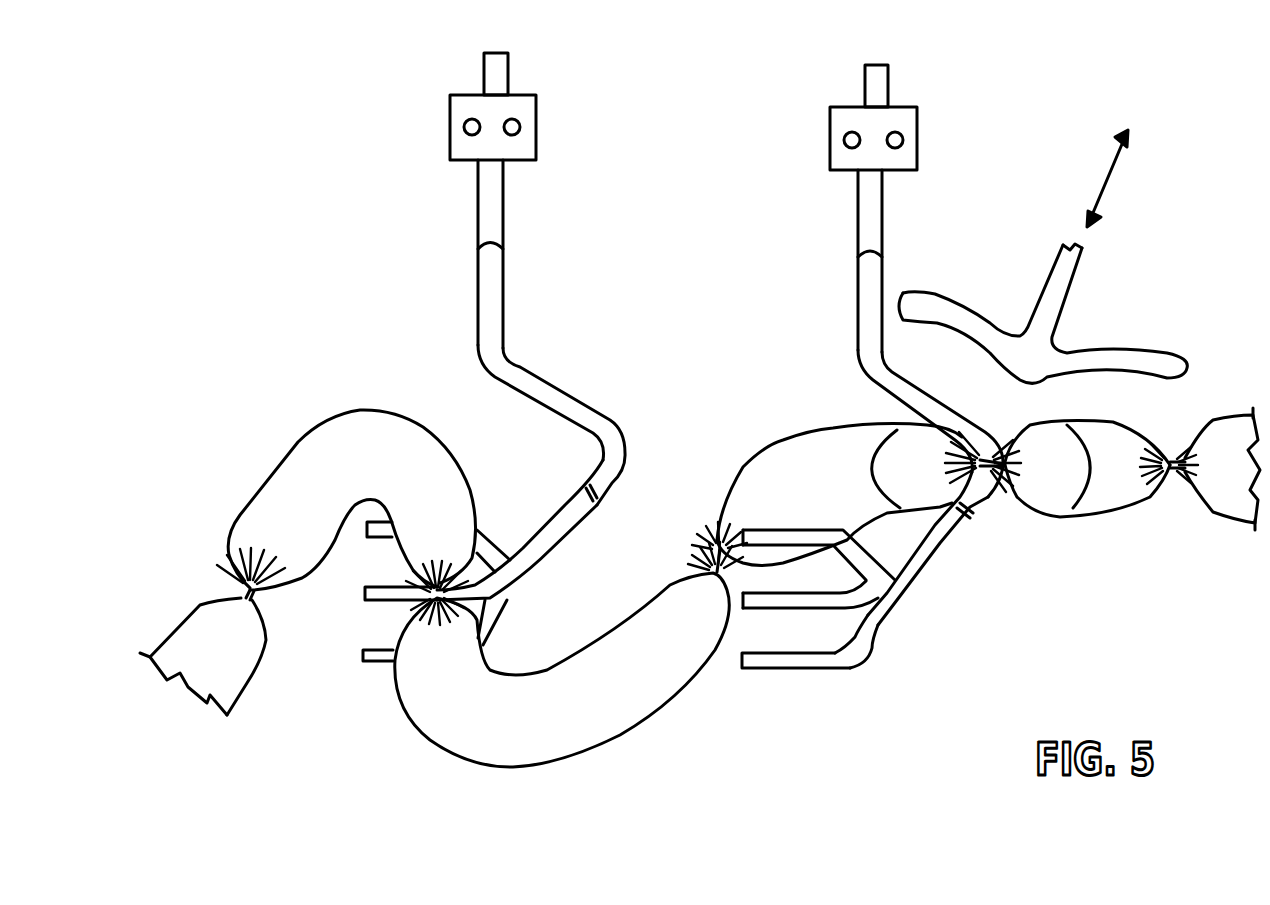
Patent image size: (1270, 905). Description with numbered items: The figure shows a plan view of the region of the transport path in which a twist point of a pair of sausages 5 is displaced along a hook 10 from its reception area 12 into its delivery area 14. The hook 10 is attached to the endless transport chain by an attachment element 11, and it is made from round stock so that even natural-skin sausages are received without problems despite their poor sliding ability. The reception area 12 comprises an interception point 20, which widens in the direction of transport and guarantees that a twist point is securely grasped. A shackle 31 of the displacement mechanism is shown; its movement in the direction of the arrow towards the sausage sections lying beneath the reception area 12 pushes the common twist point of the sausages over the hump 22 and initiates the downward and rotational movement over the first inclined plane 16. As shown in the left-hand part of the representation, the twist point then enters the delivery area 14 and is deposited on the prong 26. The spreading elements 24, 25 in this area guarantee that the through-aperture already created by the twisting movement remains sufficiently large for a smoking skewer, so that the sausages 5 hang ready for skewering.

The sausage (filled casing) 5 is at (531, 739).
The hook 10 is at (552, 223).
The attachment element 11 is at (520, 111).
The reception area 12 is at (487, 420).
The delivery area 14 is at (923, 643).
The first inclined plane 16 is at (542, 518).
The interception point 20 is at (626, 443).
The hump 22 is at (603, 498).
The spreading element 24 is at (375, 532).
The spreading element 25 is at (373, 655).
The prong 26 is at (378, 595).
The shackle 31 is at (1048, 322).